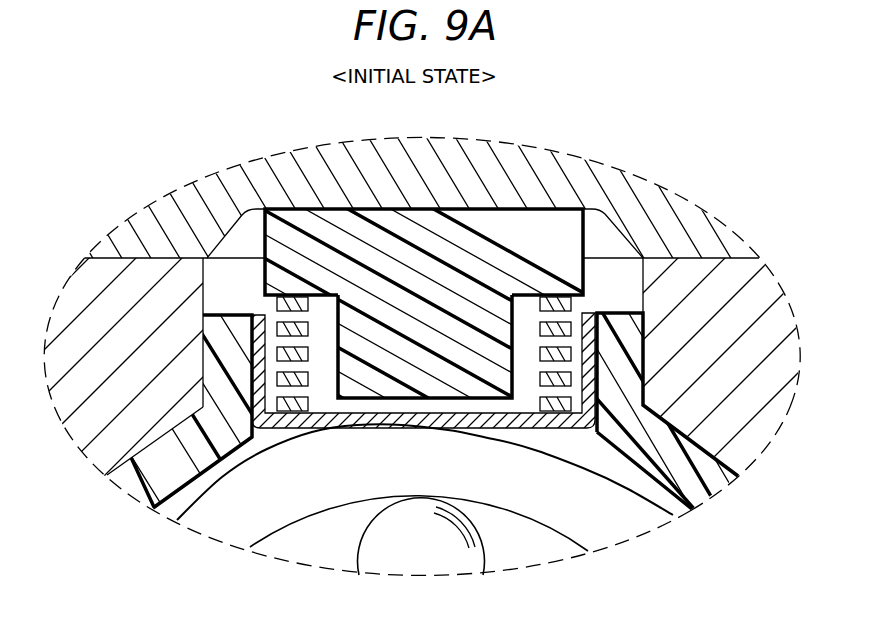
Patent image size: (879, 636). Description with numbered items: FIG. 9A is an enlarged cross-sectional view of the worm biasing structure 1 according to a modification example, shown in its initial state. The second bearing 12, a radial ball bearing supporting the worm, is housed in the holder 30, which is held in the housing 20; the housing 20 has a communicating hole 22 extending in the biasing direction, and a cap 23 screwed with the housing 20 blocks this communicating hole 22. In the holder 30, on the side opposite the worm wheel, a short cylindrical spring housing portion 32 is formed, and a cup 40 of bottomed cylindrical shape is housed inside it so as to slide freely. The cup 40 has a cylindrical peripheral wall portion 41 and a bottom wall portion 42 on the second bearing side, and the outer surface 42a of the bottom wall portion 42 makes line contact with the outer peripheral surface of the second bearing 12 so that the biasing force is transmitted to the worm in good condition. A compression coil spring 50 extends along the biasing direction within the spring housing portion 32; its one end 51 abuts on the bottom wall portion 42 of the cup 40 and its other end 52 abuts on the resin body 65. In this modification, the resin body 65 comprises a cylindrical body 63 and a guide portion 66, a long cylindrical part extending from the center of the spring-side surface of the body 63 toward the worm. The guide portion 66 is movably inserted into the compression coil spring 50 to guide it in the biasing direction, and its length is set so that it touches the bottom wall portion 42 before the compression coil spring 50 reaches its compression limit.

The worm biasing structure 1 is at (659, 162).
The second bearing 12 is at (225, 482).
The housing 20 is at (767, 446).
The communicating hole 22 is at (621, 276).
The cap 23 is at (562, 187).
The holder 30 is at (213, 360).
The spring housing portion 32 is at (150, 431).
The cup 40 is at (255, 312).
The peripheral wall portion 41 is at (203, 327).
The bottom wall portion 42 is at (475, 420).
The outer surface 42a is at (320, 428).
The compression coil spring 50 is at (576, 382).
The one end 51 is at (540, 403).
The other end 52 is at (534, 308).
The body 63 is at (333, 237).
The resin body 65 is at (260, 238).
The guide portion 66 is at (393, 370).